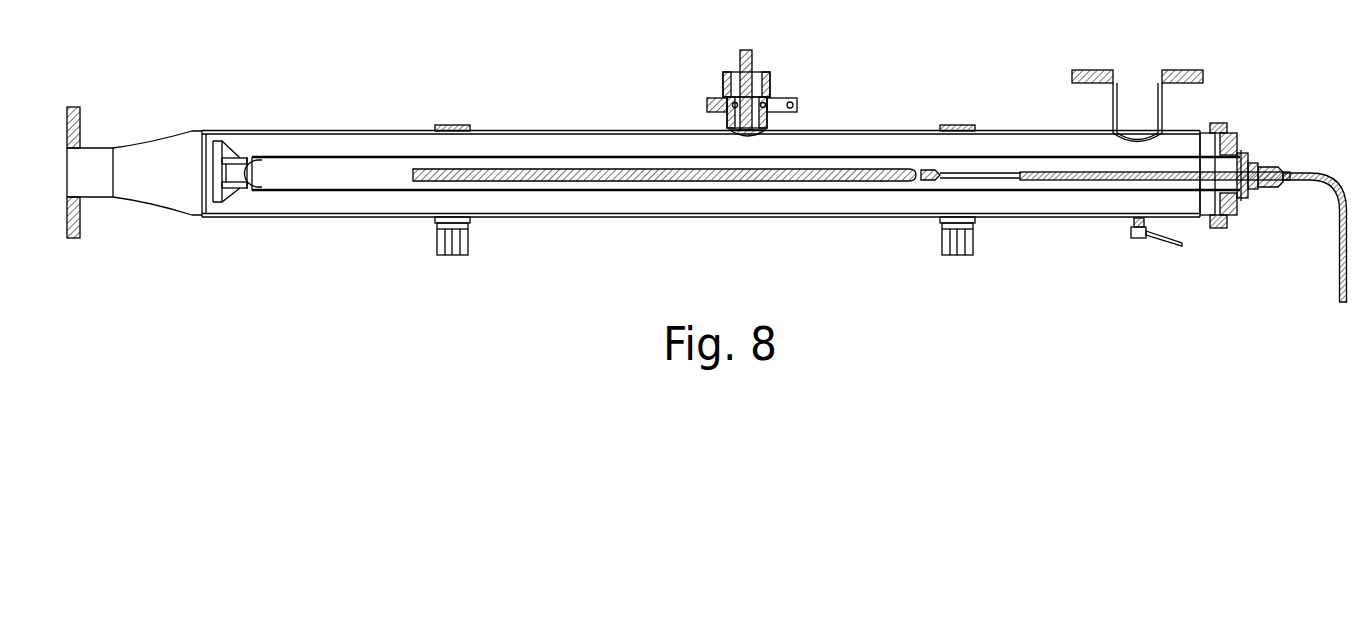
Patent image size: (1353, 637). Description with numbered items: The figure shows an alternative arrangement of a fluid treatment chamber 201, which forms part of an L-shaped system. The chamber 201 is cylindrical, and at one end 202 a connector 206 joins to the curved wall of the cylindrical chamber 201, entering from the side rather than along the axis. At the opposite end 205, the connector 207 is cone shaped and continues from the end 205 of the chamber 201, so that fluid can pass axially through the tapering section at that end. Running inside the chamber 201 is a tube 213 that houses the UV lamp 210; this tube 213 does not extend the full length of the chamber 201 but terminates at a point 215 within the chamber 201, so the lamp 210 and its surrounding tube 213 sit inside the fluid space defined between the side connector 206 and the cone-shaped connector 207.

The fluid treatment chamber 201 is at (253, 135).
The end 202 is at (1230, 131).
The opposite end 205 is at (150, 137).
The connector 206 is at (1068, 70).
The connector 207 is at (71, 107).
The UV lamp 210 is at (513, 168).
The tube 213 is at (310, 176).
The point 215 is at (224, 203).